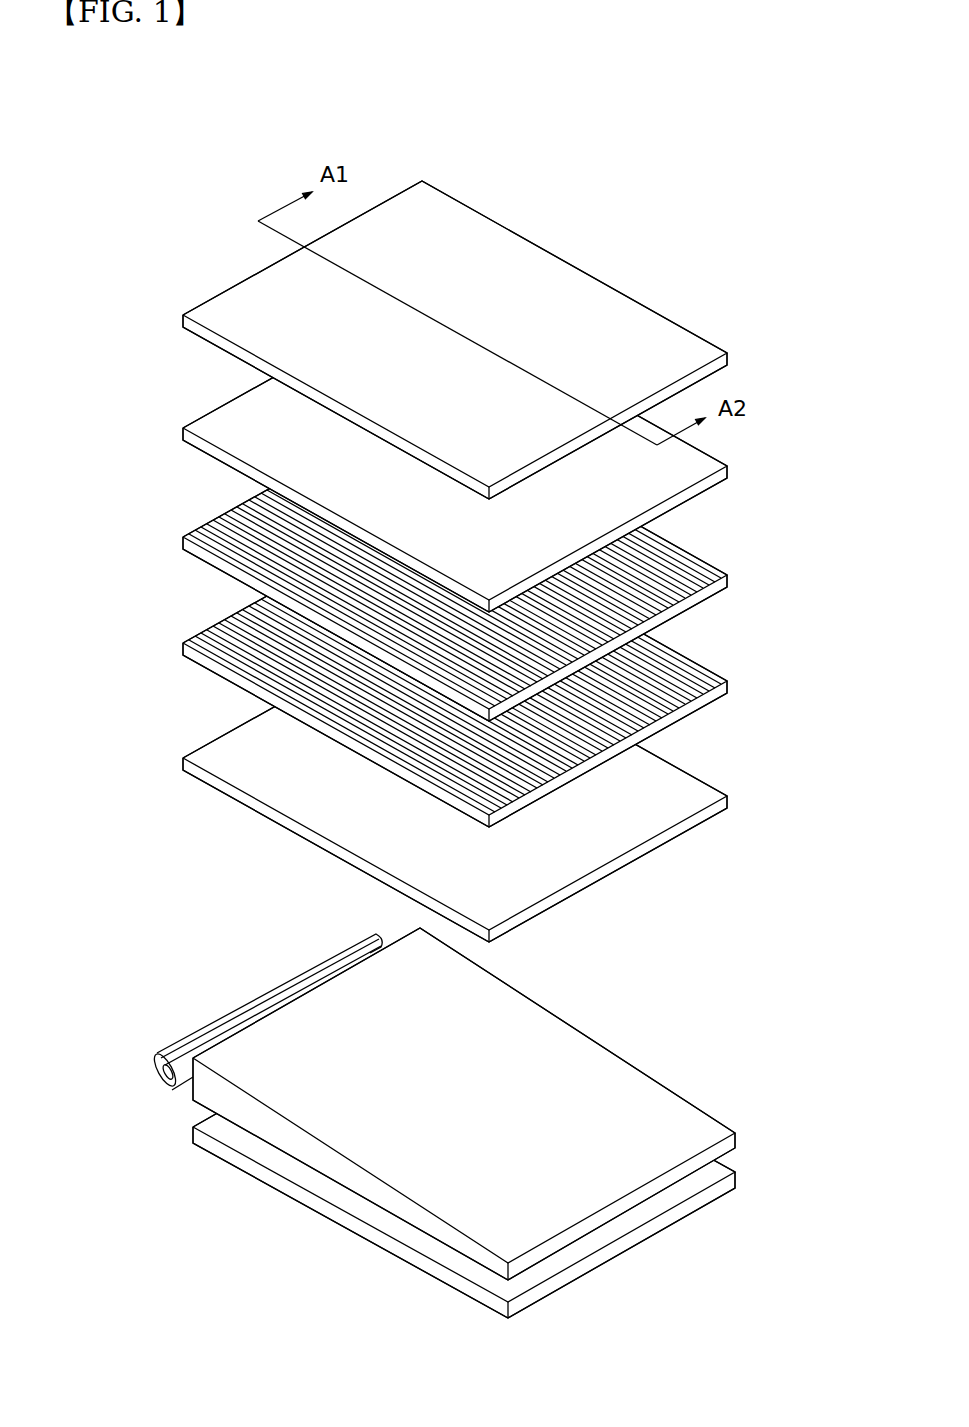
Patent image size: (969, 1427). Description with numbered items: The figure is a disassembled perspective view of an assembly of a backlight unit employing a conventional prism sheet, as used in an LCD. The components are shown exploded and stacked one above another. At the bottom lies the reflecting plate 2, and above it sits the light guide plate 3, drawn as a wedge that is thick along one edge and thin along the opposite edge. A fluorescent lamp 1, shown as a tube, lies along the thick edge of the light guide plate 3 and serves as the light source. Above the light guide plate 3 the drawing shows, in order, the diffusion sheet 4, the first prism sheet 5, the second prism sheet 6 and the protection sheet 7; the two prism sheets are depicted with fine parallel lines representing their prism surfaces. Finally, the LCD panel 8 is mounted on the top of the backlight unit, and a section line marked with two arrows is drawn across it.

The fluorescent lamp 1 is at (155, 1084).
The reflecting plate 2 is at (303, 1196).
The light guide plate 3 is at (578, 1047).
The diffusion sheet 4 is at (727, 796).
The first prism sheet 5 is at (727, 681).
The second prism sheet 6 is at (727, 575).
The protection sheet 7 is at (727, 466).
The LCD panel 8 is at (727, 353).